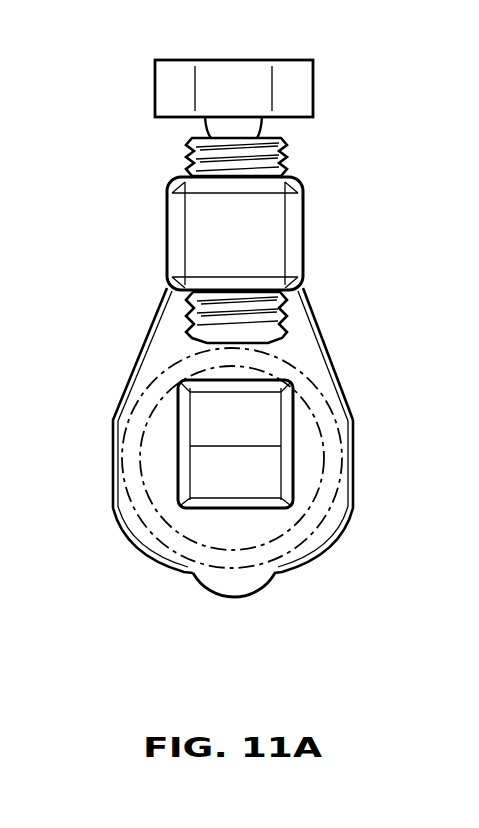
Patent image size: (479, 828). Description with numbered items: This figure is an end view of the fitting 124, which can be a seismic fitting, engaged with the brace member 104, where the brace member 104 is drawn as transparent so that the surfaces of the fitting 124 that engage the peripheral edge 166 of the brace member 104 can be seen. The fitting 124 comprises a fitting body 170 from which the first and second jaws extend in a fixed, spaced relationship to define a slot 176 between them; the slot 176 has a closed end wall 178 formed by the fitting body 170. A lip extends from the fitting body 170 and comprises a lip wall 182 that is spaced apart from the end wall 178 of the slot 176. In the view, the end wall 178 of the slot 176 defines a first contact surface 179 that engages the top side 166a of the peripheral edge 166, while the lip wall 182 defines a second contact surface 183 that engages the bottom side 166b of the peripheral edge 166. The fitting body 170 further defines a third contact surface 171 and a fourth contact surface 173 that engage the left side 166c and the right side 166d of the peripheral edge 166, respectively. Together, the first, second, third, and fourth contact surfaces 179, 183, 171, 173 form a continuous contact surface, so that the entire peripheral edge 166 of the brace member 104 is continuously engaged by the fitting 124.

The brace member 104 is at (370, 468).
The fitting 124 is at (368, 226).
The slot 176 is at (182, 338).
The first contact surface 179 is at (210, 352).
The end wall 178 is at (247, 372).
The fitting body 170 is at (307, 488).
The peripheral edge 166 is at (340, 458).
The top side 166a is at (258, 350).
The bottom side 166b is at (270, 557).
The left side 166c is at (125, 462).
The right side 166d is at (344, 432).
The third contact surface 171 is at (145, 508).
The fourth contact surface 173 is at (327, 483).
The lip wall 182 is at (182, 572).
The second contact surface 183 is at (283, 550).